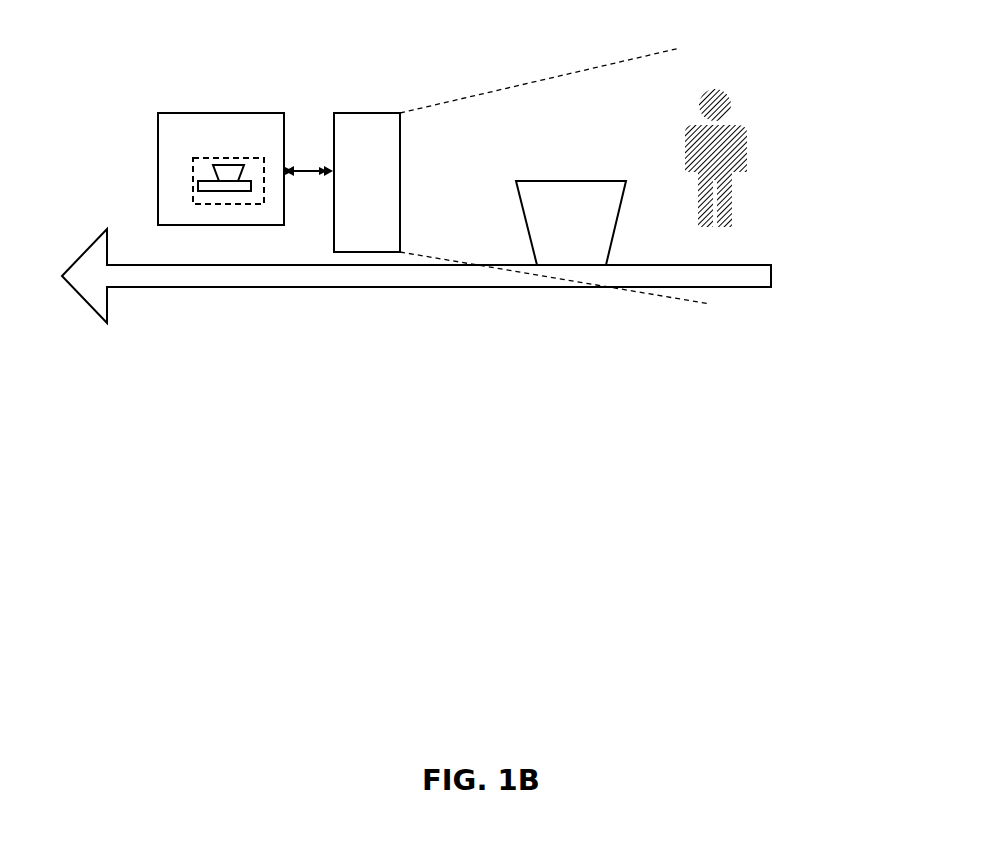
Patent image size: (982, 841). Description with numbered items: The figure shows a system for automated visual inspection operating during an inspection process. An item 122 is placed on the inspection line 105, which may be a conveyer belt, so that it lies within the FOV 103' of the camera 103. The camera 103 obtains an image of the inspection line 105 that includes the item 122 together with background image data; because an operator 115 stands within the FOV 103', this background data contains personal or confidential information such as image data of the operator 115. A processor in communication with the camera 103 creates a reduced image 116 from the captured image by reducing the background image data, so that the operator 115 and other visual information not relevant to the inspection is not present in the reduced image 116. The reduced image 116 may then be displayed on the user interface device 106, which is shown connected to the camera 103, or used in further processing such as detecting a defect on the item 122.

The camera 103 is at (367, 182).
The FOV 103' is at (540, 175).
The inspection line 105 is at (281, 276).
The user interface device 106 is at (166, 204).
The operator 115 is at (735, 127).
The reduced image 116 is at (198, 157).
The item 122 is at (550, 234).